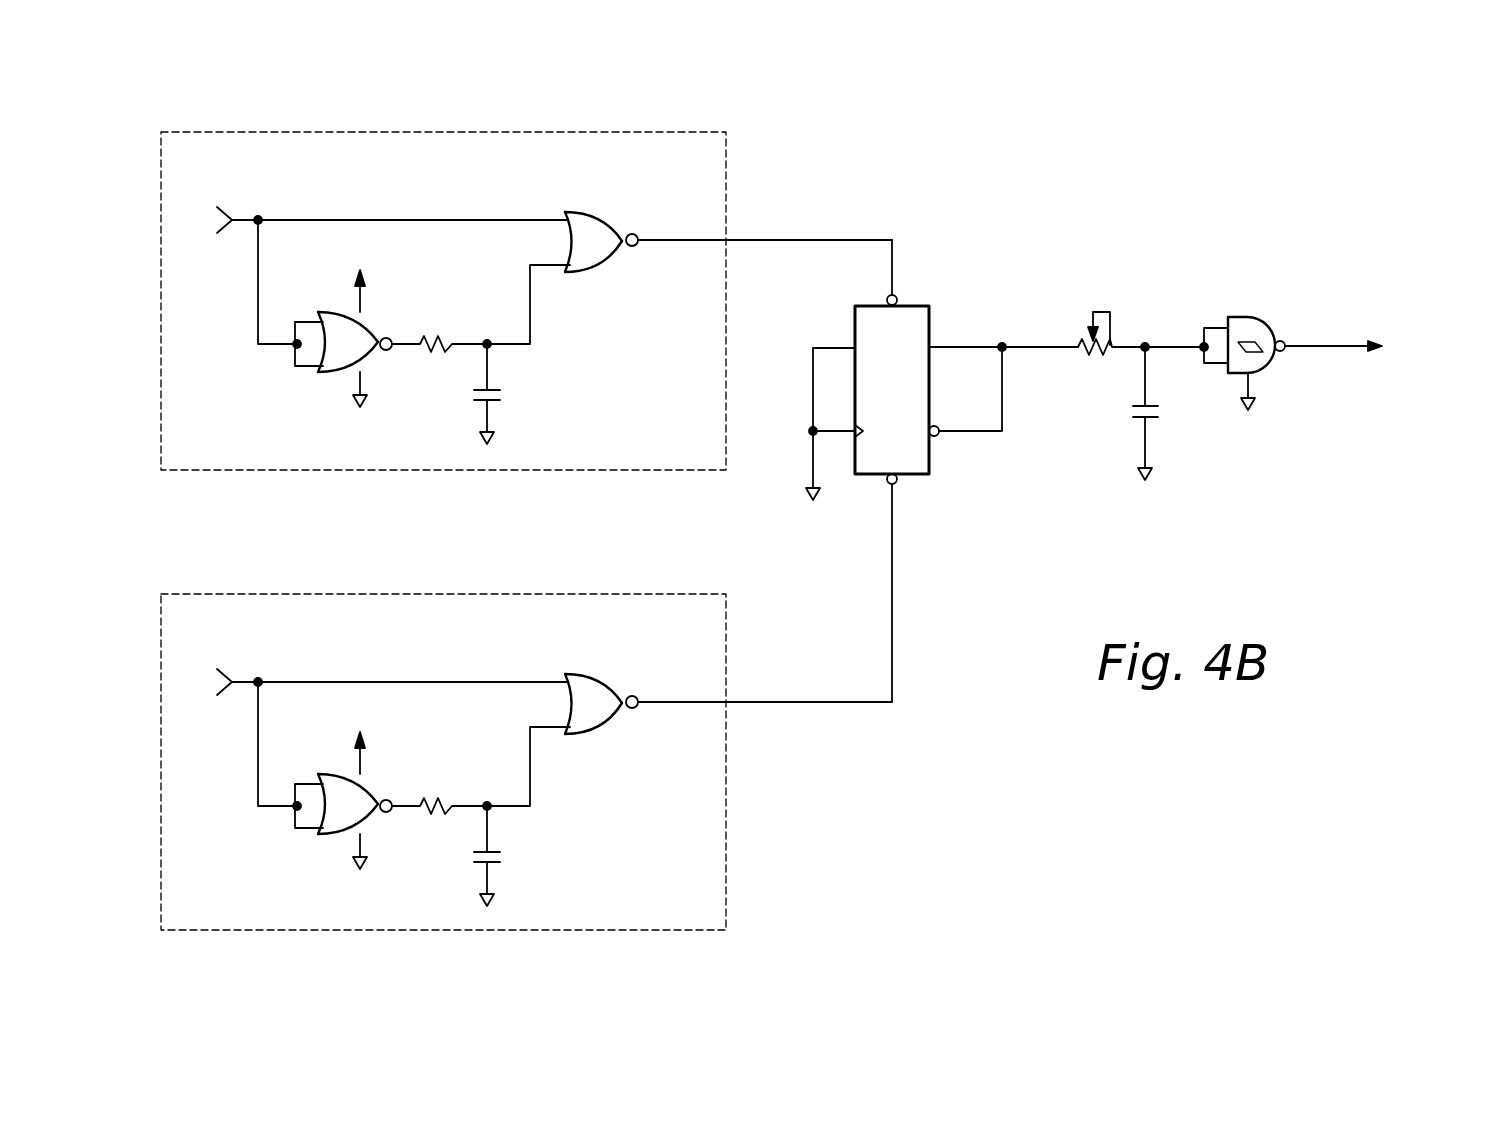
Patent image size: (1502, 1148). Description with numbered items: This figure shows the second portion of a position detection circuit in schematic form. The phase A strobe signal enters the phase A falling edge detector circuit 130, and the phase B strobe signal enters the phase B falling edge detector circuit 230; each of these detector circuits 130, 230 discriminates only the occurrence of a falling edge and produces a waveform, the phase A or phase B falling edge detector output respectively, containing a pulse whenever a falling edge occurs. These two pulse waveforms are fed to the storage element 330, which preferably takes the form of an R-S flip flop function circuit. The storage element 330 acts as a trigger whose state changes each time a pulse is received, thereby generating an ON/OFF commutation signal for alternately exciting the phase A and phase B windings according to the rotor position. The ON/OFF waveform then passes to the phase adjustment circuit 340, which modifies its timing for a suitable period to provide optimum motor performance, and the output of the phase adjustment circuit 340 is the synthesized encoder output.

The phase A falling edge detector circuit 130 is at (751, 141).
The phase B falling edge detector circuit 230 is at (751, 604).
The storage element 330 is at (941, 242).
The phase adjustment circuit 340 is at (1313, 275).